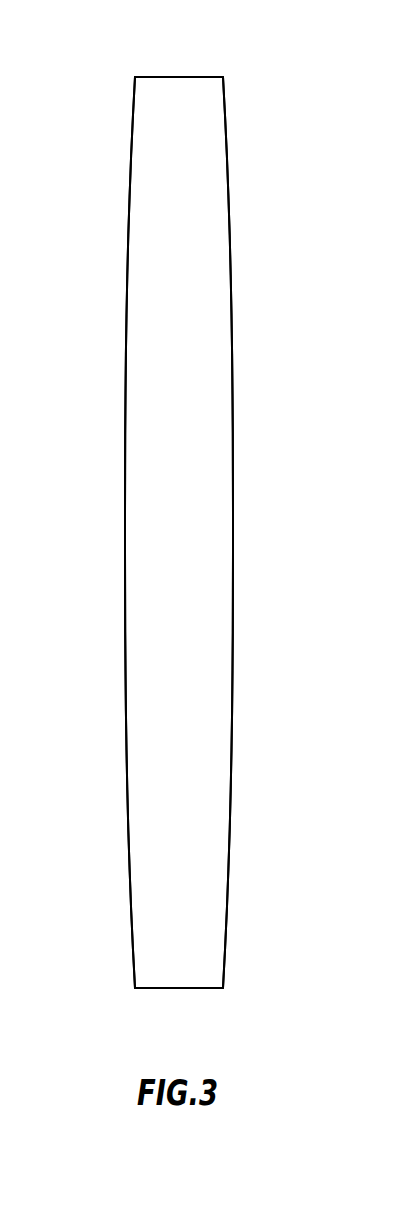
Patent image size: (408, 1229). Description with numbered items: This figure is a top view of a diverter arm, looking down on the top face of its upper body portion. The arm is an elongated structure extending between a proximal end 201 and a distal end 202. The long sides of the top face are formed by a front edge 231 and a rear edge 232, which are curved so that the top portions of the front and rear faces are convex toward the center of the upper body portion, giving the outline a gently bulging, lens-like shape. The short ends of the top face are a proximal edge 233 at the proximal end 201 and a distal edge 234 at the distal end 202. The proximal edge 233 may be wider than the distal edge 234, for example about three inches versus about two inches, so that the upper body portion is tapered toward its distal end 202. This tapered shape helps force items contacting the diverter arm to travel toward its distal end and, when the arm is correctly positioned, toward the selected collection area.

The distal end 202 is at (142, 72).
The proximal end 201 is at (152, 995).
The front edge 231 is at (235, 493).
The rear edge 232 is at (123, 497).
The proximal edge 233 is at (200, 992).
The distal edge 234 is at (198, 75).